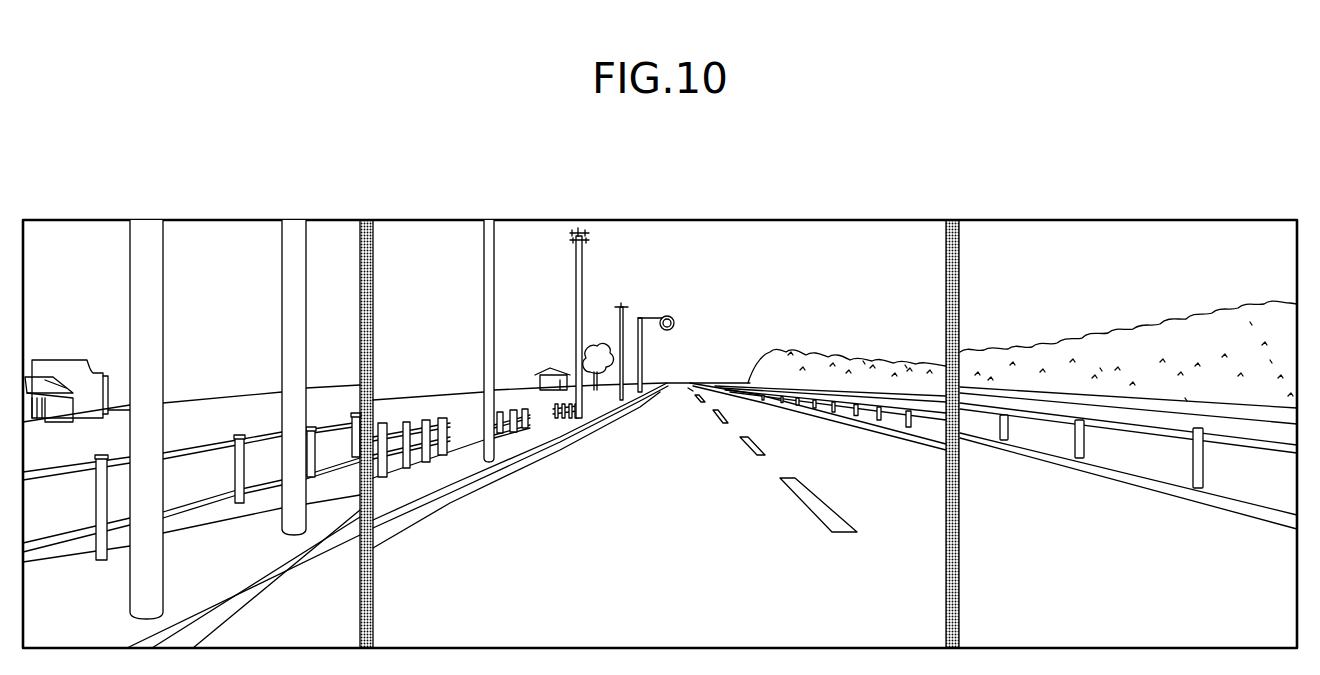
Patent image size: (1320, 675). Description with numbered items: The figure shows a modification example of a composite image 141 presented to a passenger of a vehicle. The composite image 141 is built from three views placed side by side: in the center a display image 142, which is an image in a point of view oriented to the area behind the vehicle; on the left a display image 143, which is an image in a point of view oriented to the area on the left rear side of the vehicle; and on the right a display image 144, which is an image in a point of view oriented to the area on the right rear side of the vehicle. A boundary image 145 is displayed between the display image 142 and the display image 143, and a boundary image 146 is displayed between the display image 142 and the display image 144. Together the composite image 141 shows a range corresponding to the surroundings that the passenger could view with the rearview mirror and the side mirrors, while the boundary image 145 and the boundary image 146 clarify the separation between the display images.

The composite image 141 is at (832, 220).
The display image 142 is at (733, 234).
The display image 143 is at (206, 236).
The display image 144 is at (1133, 234).
The boundary image 145 is at (361, 262).
The boundary image 146 is at (958, 258).